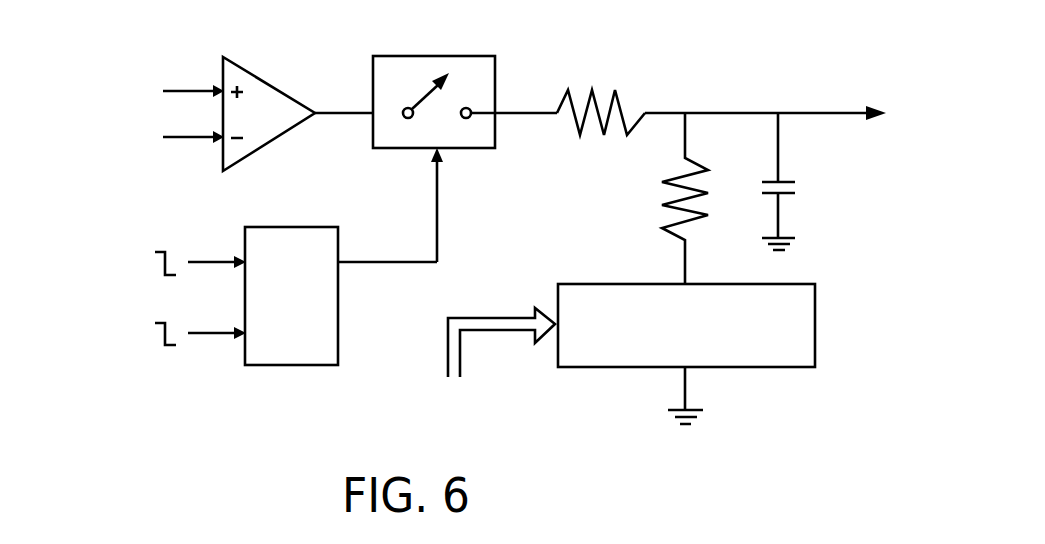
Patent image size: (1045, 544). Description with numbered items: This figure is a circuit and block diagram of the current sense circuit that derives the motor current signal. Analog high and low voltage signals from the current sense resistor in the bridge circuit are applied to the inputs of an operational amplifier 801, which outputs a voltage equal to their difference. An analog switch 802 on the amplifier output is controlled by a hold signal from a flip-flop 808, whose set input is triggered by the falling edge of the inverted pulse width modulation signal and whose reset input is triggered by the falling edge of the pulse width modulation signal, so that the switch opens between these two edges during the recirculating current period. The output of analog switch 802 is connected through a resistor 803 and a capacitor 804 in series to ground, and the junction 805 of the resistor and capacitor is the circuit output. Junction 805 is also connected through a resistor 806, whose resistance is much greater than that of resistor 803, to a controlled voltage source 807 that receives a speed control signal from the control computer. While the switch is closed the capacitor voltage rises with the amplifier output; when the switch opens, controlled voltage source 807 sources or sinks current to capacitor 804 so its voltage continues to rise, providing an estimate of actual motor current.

The operational amplifier 801 is at (302, 95).
The analog switch 802 is at (430, 50).
The resistor 803 is at (592, 86).
The capacitor 804 is at (802, 182).
The junction 805 is at (685, 108).
The resistor 806 is at (662, 192).
The controlled voltage source 807 is at (823, 320).
The flip-flop 808 is at (298, 372).